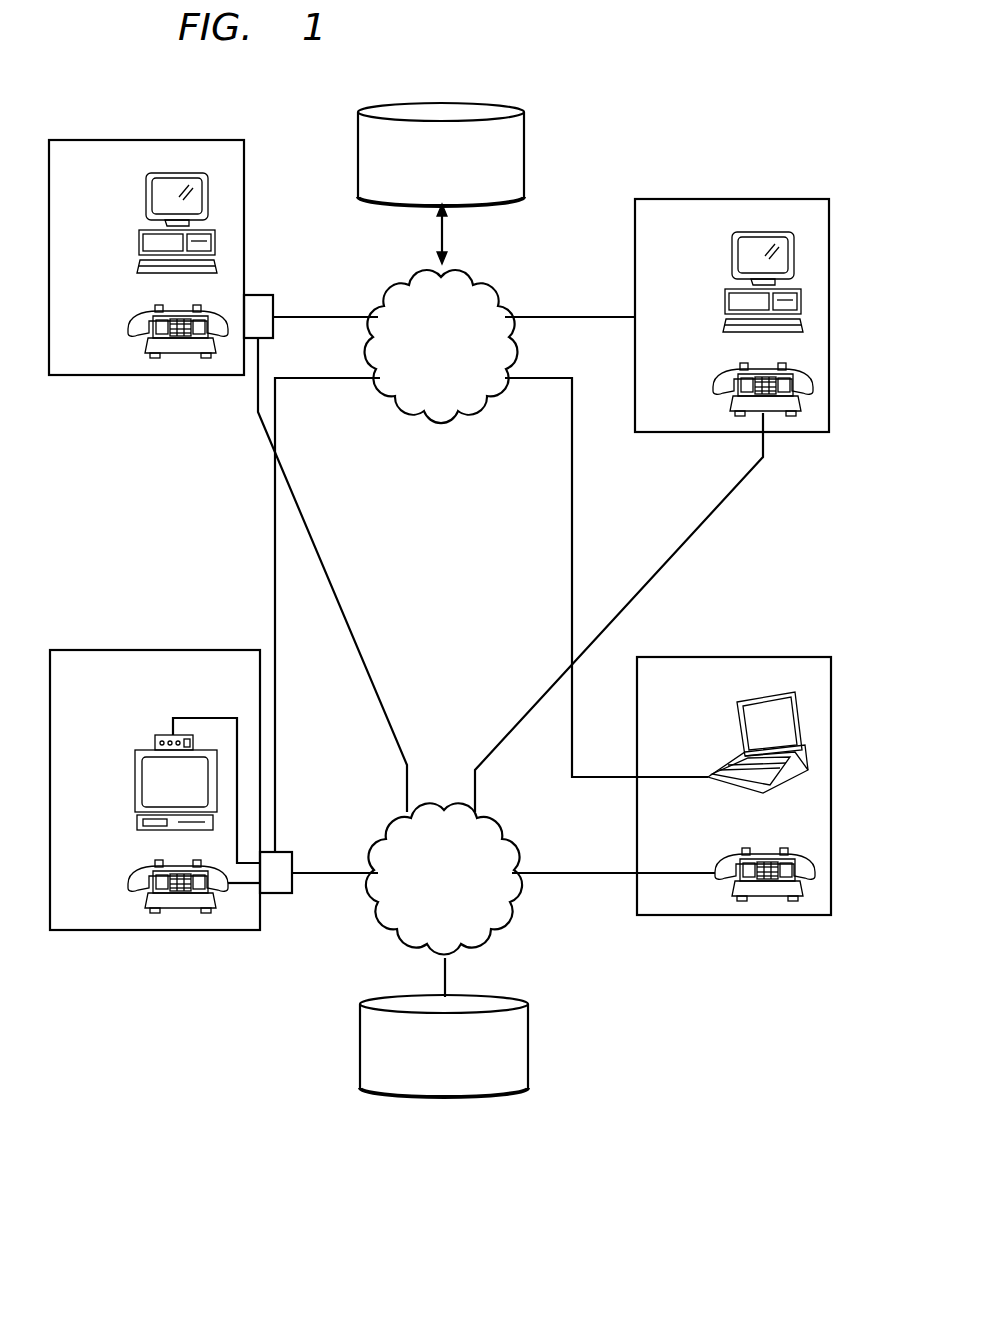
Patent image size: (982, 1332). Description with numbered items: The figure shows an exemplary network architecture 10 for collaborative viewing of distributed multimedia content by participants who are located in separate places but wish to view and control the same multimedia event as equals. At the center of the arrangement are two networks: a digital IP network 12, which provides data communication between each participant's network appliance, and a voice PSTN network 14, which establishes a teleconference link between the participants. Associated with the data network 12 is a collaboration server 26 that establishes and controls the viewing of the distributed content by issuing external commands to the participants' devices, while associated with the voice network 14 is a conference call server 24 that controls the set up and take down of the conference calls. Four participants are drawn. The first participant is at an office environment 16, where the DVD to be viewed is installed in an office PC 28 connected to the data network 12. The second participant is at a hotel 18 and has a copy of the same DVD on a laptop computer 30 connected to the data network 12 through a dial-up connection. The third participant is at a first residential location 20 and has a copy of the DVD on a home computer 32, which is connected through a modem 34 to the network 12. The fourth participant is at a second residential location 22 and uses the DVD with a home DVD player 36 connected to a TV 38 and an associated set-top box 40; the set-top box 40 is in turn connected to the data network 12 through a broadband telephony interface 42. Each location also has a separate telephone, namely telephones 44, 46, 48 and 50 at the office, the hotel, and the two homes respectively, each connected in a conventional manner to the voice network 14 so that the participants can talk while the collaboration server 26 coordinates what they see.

The network architecture 10 is at (252, 1048).
The digital network 12 is at (491, 292).
The voice network 14 is at (440, 800).
The office environment 16 is at (655, 199).
The hotel 18 is at (656, 657).
The first residential location 20 is at (70, 140).
The second residential location 22 is at (70, 650).
The conference call server 24 is at (529, 1047).
The collaboration server 26 is at (452, 104).
The office PC 28 is at (732, 256).
The laptop computer 30 is at (737, 718).
The home computer 32 is at (146, 197).
The modem 34 is at (262, 296).
The home DVD player 36 is at (137, 822).
The TV 38 is at (135, 782).
The set-top box 40 is at (155, 740).
The broadband telephony interface 42 is at (272, 894).
The telephone 44 is at (714, 376).
The telephone 46 is at (716, 861).
The telephone 48 is at (128, 326).
The telephone 50 is at (128, 881).